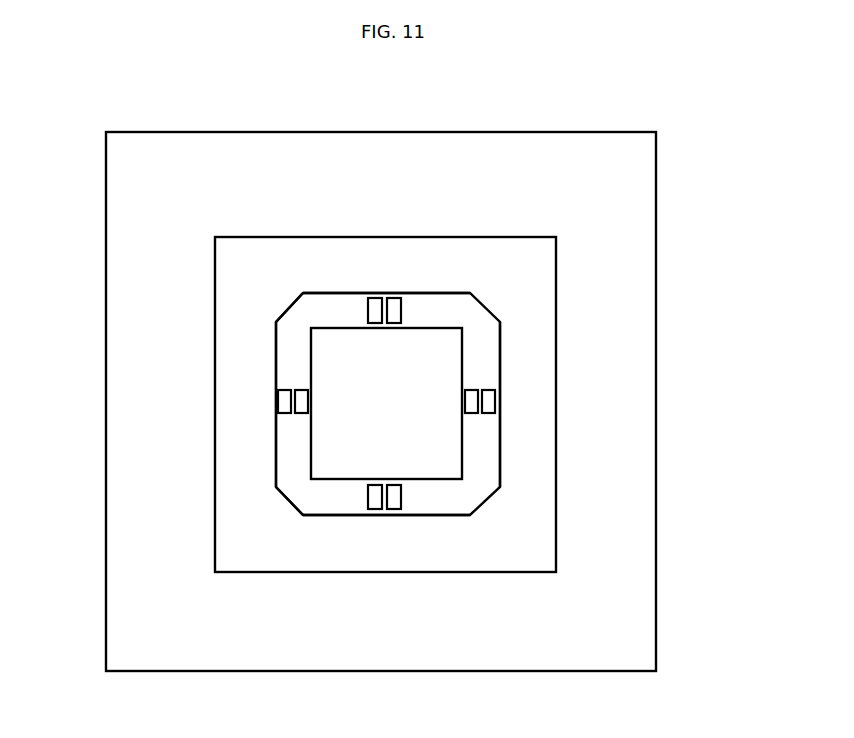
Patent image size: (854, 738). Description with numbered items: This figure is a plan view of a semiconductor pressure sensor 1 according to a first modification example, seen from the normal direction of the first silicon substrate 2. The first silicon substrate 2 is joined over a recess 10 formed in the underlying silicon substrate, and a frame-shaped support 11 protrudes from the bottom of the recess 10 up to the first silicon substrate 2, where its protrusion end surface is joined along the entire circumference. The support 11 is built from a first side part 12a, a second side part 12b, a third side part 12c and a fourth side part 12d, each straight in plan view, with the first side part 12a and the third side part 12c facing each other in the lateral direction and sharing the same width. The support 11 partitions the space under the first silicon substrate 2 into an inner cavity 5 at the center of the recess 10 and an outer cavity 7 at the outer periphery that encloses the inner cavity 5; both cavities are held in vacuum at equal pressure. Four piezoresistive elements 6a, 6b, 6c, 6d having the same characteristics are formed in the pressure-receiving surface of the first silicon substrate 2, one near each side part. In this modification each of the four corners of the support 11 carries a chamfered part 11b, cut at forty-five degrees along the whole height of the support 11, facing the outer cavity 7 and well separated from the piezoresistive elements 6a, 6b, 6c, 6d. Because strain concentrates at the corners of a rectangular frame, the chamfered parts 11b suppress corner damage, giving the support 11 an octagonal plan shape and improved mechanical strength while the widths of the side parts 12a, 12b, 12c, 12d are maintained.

The semiconductor pressure sensor 1 is at (604, 123).
The first silicon substrate 2 is at (625, 594).
The inner cavity 5 is at (517, 365).
The piezoresistive element 6a is at (384, 205).
The piezoresistive element 6b is at (187, 426).
The piezoresistive element 6c is at (384, 599).
The piezoresistive element 6d is at (584, 426).
The outer cavity 7 is at (469, 395).
The recess 10 is at (477, 404).
The support 11 is at (502, 404).
The chamfered part 11b is at (180, 404).
The first side part 12a is at (386, 200).
The second side part 12b is at (175, 412).
The third side part 12c is at (386, 606).
The fourth side part 12d is at (612, 394).